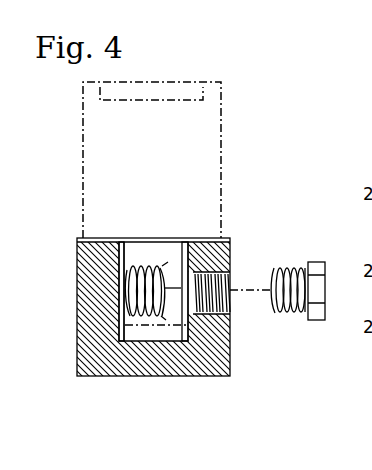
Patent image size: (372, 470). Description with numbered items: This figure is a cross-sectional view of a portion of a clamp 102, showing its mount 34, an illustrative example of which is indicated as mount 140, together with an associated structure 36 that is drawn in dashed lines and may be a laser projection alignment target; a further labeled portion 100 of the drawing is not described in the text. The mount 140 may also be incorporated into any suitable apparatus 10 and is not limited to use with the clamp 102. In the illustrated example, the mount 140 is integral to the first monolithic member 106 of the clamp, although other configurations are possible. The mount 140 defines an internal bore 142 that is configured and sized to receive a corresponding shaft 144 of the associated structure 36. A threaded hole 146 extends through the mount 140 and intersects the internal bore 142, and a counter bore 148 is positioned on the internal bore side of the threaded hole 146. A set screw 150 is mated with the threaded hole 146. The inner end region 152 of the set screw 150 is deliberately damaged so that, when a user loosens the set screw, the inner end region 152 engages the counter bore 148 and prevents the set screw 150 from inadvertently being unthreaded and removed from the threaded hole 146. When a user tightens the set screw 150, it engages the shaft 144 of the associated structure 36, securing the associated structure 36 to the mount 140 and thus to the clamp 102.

The apparatus 10 is at (345, 79).
The mount 34 is at (295, 246).
The associated structure 36 is at (223, 201).
The mounting assembly 100 is at (309, 104).
The clamp 102 is at (262, 142).
The first monolithic member 106 is at (230, 353).
The mount 140 is at (252, 257).
The internal bore 142 is at (126, 247).
The shaft 144 is at (146, 332).
The threaded hole 146 is at (190, 291).
The counter bore 148 is at (181, 276).
The set screw 150 is at (122, 302).
The inner end region 152 is at (114, 283).